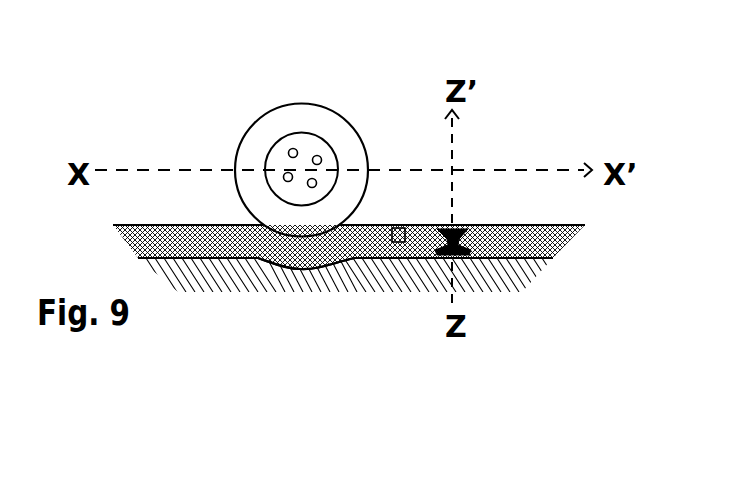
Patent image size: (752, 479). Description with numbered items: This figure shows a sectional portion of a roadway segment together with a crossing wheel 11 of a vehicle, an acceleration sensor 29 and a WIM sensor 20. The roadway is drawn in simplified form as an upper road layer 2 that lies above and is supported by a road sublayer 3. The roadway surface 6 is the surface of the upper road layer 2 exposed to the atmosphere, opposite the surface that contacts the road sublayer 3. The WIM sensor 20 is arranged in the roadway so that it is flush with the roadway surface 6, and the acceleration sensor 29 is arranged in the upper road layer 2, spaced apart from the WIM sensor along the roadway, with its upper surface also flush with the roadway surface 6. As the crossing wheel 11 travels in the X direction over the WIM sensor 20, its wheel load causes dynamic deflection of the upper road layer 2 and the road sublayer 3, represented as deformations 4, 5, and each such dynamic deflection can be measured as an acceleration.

The upper road layer 2 is at (165, 240).
The road sublayer 3 is at (167, 262).
The deformation 4 is at (297, 247).
The deformation 5 is at (312, 268).
The roadway surface 6 is at (205, 225).
The crossing wheel 11 is at (273, 127).
The WIM sensor 20 is at (455, 252).
The acceleration sensor 29 is at (397, 243).